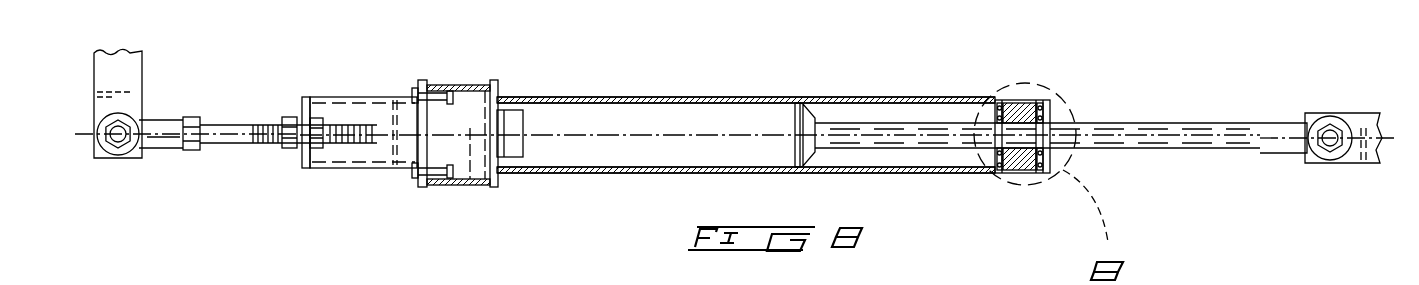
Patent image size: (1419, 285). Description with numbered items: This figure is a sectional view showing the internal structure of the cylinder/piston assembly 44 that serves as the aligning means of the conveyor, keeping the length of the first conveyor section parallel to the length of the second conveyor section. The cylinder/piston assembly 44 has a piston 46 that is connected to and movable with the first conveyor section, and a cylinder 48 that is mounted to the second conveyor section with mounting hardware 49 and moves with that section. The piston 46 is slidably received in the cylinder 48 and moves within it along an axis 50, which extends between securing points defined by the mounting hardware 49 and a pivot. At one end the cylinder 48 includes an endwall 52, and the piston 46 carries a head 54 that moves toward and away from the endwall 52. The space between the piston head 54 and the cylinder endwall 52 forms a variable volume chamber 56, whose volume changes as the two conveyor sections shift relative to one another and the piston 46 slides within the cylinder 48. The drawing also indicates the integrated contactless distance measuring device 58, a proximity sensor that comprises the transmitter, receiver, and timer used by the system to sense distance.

The cylinder/piston assembly 44 is at (747, 71).
The piston 46 is at (1170, 150).
The cylinder 48 is at (623, 97).
The mounting hardware 49 is at (193, 150).
The axis 50 is at (1397, 140).
The endwall 52 is at (499, 87).
The head 54 is at (807, 117).
The variable volume chamber 56 is at (643, 145).
The integrated contactless distance measuring device 58 is at (508, 160).